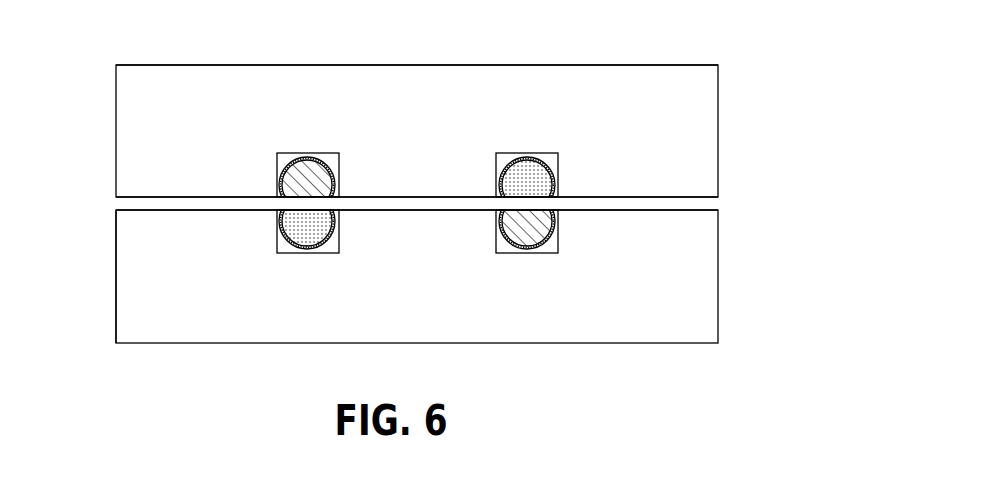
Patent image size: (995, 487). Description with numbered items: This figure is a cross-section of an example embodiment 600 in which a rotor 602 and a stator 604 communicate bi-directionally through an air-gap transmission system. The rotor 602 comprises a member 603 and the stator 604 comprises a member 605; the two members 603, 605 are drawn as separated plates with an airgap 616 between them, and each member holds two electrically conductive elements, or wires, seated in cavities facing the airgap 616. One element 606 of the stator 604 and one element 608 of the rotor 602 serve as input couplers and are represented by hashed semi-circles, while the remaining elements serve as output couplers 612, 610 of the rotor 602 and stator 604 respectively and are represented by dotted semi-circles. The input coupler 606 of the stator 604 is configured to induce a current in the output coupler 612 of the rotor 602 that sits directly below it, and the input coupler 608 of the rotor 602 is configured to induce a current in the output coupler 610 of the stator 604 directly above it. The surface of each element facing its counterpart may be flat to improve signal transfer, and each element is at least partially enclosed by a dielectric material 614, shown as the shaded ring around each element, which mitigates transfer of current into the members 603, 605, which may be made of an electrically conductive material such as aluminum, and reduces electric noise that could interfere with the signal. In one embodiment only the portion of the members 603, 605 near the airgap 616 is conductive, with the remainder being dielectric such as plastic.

The example embodiment 600 is at (752, 26).
The rotor 602 is at (98, 277).
The member 603 is at (80, 275).
The stator 604 is at (98, 130).
The member 605 is at (397, 49).
The input coupler 606 is at (273, 179).
The input coupler 608 is at (493, 226).
The output coupler 610 is at (492, 179).
The output coupler 612 is at (273, 226).
The dielectric material 614 is at (396, 205).
The airgap 616 is at (715, 204).